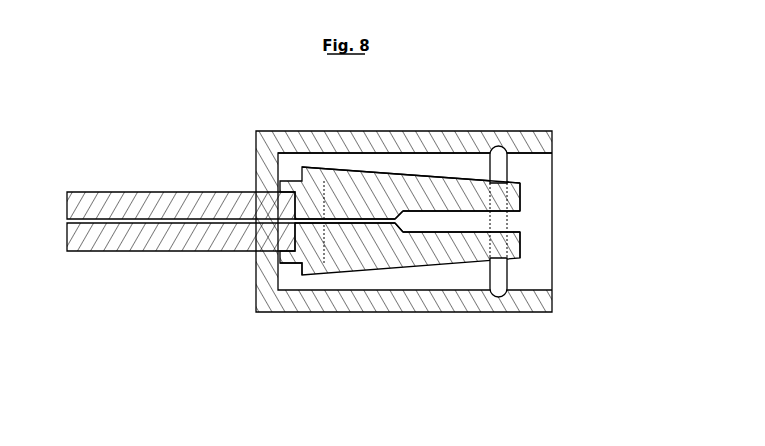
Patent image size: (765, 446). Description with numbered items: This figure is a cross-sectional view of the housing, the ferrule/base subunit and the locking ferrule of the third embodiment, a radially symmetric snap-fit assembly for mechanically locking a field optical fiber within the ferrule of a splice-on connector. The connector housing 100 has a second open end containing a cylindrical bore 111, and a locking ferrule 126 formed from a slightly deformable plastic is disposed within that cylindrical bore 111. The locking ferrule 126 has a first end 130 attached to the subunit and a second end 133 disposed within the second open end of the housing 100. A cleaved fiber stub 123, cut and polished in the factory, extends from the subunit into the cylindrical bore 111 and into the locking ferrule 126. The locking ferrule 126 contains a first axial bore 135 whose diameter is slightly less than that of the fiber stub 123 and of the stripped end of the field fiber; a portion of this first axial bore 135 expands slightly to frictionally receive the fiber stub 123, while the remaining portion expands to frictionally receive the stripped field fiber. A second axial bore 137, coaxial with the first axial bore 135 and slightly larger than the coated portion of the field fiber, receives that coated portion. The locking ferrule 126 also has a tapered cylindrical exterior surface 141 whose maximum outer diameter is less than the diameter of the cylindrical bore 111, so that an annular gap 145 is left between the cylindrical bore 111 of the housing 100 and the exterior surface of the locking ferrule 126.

The connector housing 100 is at (293, 131).
The cylindrical bore 111 is at (472, 278).
The cleaved fiber stub 123 is at (333, 222).
The locking ferrule 126 is at (388, 190).
The first end 130 is at (302, 273).
The second end 133 is at (520, 243).
The first axial bore 135 is at (373, 222).
The second axial bore 137 is at (498, 222).
The tapered cylindrical exterior surface 141 is at (413, 177).
The annular gap 145 is at (453, 168).